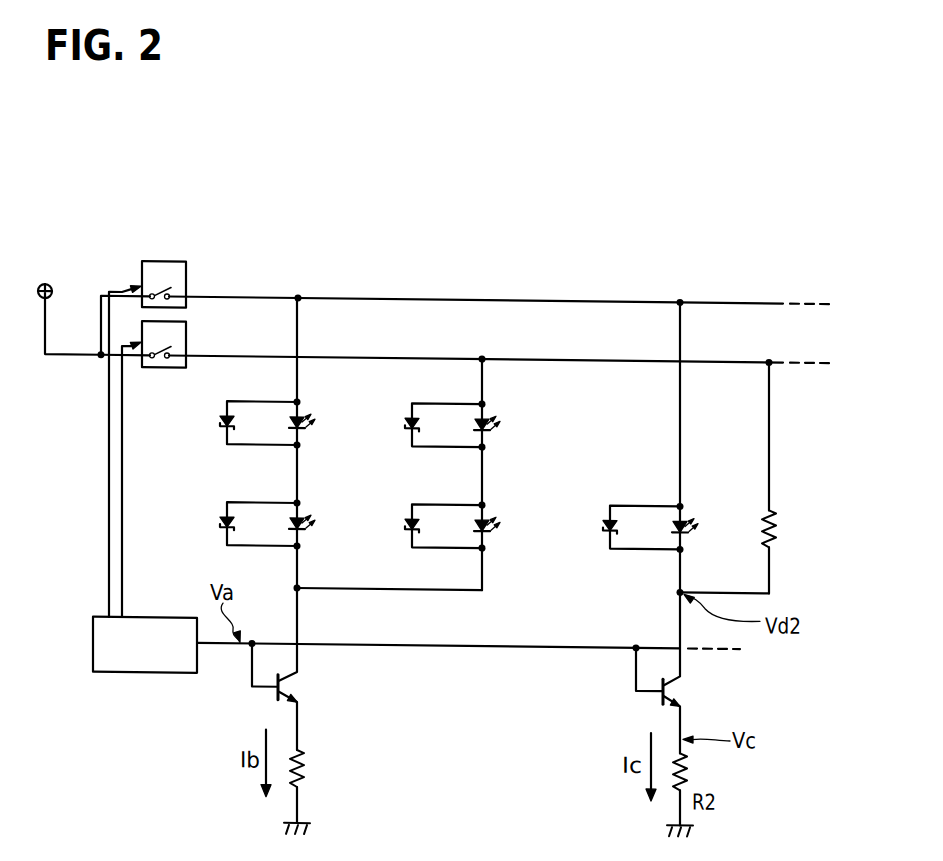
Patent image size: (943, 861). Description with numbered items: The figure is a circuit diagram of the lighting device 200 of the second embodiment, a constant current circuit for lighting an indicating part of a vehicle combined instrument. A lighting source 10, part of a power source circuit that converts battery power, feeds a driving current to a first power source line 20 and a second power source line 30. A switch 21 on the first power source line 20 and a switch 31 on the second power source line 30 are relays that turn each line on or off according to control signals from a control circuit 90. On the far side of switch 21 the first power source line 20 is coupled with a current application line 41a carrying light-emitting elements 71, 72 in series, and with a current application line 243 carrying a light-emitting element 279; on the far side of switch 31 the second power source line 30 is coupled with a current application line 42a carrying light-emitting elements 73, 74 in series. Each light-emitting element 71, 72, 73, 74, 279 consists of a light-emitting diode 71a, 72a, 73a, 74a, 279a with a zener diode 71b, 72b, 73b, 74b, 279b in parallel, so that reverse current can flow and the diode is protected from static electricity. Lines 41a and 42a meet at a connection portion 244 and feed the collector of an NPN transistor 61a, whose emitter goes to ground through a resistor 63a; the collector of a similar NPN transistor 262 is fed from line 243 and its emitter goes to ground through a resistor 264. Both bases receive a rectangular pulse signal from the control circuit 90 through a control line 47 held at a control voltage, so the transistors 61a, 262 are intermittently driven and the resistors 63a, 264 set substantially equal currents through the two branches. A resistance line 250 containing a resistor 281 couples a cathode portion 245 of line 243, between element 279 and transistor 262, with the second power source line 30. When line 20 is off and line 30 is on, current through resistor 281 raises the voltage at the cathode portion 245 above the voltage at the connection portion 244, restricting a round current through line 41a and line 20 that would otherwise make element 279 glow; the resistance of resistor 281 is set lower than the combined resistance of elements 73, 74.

The lighting source 10 is at (45, 286).
The lighting device 200 is at (104, 265).
The switch 21 is at (163, 263).
The switch 31 is at (187, 338).
The first power source line 20 is at (232, 298).
The second power source line 30 is at (250, 357).
The current application line 41a is at (299, 327).
The current application line 42a is at (484, 381).
The current application line 243 is at (683, 326).
The resistance line 250 is at (771, 377).
The light-emitting element 71 is at (353, 382).
The light-emitting diode 71a is at (302, 420).
The zener diode 71b is at (236, 427).
The light-emitting element 72 is at (353, 483).
The light-emitting diode 72a is at (302, 521).
The zener diode 72b is at (236, 528).
The light-emitting element 73 is at (538, 382).
The light-emitting diode 73a is at (487, 420).
The zener diode 73b is at (421, 427).
The light-emitting element 74 is at (538, 483).
The light-emitting diode 74a is at (487, 521).
The zener diode 74b is at (421, 528).
The light-emitting element 279 is at (628, 414).
The light-emitting diode 279a is at (687, 522).
The zener diode 279b is at (616, 526).
The resistor 281 is at (773, 522).
The connection portion 244 is at (295, 588).
The cathode portion 245 is at (678, 588).
The control circuit 90 is at (127, 674).
The control line 47 is at (212, 646).
The transistor 61a is at (300, 681).
The resistor 63a is at (304, 769).
The transistor 262 is at (682, 678).
The resistor 264 is at (685, 771).